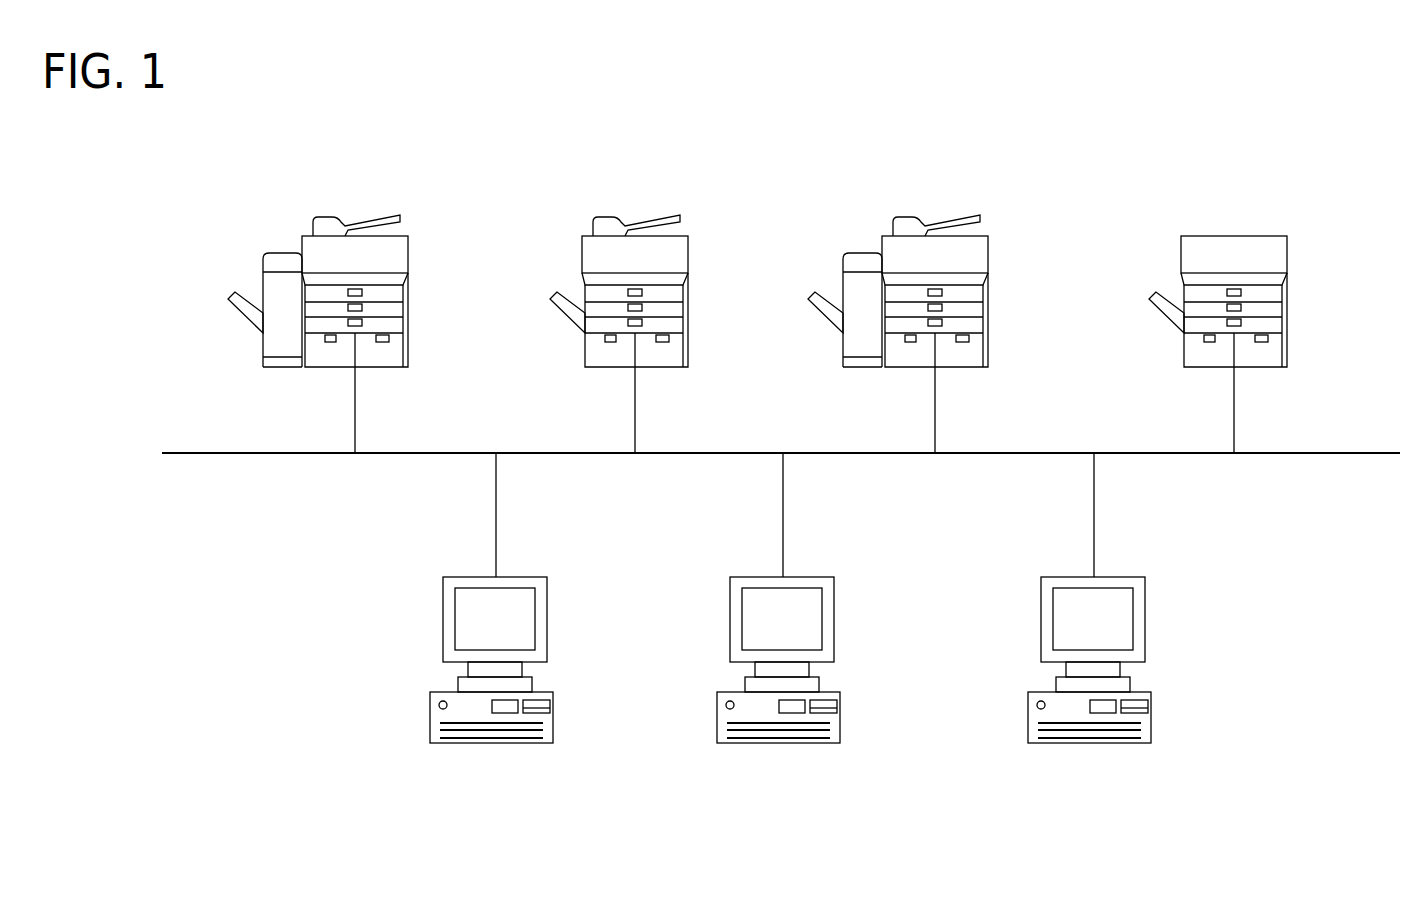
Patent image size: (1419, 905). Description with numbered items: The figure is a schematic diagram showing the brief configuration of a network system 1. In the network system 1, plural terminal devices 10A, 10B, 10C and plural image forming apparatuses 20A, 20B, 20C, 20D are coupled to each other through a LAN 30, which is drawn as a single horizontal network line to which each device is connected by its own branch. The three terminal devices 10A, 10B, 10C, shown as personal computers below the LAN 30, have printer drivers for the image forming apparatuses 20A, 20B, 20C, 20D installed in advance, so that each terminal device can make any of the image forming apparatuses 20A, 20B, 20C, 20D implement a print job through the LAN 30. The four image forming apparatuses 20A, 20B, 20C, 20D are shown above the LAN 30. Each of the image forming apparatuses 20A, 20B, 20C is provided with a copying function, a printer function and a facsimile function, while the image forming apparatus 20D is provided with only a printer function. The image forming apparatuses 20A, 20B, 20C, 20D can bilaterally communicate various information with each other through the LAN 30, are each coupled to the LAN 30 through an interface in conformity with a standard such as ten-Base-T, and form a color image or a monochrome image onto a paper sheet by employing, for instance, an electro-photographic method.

The network system 1 is at (1322, 172).
The terminal device 10A is at (492, 744).
The terminal device 10B is at (779, 744).
The terminal device 10C is at (1091, 744).
The image forming apparatus 20A is at (355, 217).
The image forming apparatus 20B is at (637, 217).
The image forming apparatus 20C is at (935, 217).
The image forming apparatus 20D is at (1235, 237).
The LAN (Local Area Network) 30 is at (1330, 458).